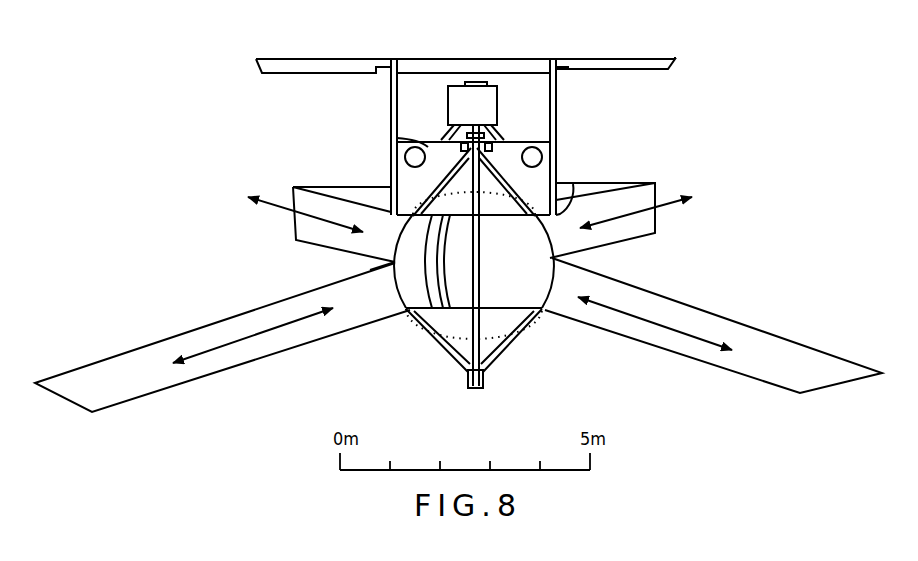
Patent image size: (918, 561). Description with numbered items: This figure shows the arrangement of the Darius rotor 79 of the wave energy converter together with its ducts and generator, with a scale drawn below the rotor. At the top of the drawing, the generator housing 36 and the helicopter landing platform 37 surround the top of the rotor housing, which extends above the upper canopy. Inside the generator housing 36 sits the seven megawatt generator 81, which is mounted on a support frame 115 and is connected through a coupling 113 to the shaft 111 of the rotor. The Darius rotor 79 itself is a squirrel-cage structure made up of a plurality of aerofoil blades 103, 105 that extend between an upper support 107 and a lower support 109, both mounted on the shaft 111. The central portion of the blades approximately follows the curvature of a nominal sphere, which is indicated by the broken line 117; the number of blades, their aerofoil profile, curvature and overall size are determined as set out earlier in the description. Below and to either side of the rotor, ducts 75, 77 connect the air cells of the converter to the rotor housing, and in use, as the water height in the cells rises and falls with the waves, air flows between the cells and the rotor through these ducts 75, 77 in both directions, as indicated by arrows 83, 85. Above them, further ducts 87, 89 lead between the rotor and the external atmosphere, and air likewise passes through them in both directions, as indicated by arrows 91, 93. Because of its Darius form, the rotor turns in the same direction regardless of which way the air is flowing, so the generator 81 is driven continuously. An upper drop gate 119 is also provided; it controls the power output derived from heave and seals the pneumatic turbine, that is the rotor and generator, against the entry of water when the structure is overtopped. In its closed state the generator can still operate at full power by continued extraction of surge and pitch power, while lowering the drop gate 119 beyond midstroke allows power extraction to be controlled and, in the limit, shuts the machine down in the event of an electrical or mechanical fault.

The helicopter landing platform 37 is at (668, 58).
The generator housing 36 is at (560, 102).
The generator 81 is at (448, 101).
The coupling 113 is at (488, 147).
The support frame 115 is at (397, 138).
The upper support 107 is at (433, 185).
The upper drop gate 119 is at (573, 184).
The arrow 91 is at (293, 215).
The arrow 93 is at (655, 215).
The further duct 87 is at (294, 242).
The further duct 89 is at (622, 245).
The Darius rotor 79 is at (368, 263).
The aerofoil blade 103 is at (428, 262).
The aerofoil blade 105 is at (450, 290).
The broken line 117 is at (497, 342).
The lower support 109 is at (505, 355).
The shaft 111 is at (466, 368).
The duct 75 is at (227, 368).
The duct 77 is at (640, 342).
The arrow 83 is at (295, 322).
The arrow 85 is at (695, 337).